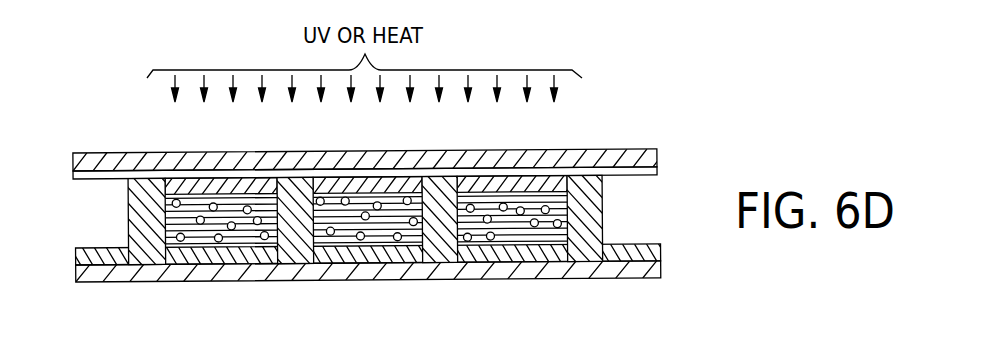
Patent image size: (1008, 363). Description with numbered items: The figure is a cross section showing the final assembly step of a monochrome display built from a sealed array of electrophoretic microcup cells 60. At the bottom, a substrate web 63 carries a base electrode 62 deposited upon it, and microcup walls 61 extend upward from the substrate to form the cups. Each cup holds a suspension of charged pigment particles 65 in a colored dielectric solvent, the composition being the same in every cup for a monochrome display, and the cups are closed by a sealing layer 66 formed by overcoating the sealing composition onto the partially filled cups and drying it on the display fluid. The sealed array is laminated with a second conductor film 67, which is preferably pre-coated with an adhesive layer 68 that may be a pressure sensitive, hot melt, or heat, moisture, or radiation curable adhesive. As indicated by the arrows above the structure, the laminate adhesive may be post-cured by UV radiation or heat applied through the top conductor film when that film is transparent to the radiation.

The sealed array of electrophoretic microcup cells 60 is at (374, 200).
The microcup walls 61 is at (602, 214).
The base electrode 62 is at (345, 252).
The substrate web 63 is at (520, 273).
The charged pigment particles 65 is at (187, 244).
The sealing layer 66 is at (540, 187).
The second conductor film 67 is at (187, 153).
The adhesive layer 68 is at (372, 173).